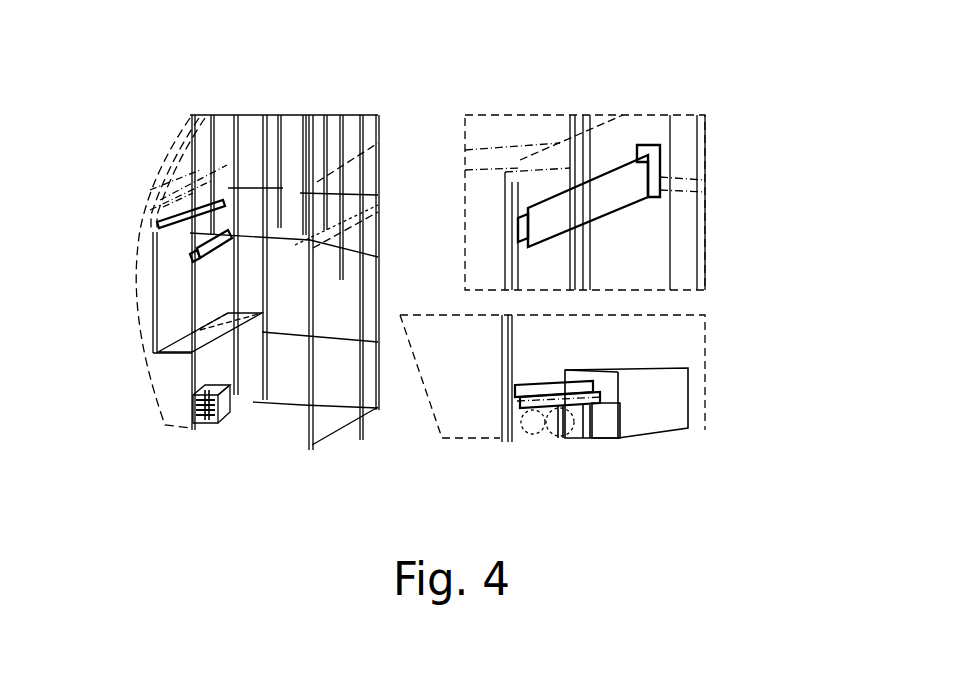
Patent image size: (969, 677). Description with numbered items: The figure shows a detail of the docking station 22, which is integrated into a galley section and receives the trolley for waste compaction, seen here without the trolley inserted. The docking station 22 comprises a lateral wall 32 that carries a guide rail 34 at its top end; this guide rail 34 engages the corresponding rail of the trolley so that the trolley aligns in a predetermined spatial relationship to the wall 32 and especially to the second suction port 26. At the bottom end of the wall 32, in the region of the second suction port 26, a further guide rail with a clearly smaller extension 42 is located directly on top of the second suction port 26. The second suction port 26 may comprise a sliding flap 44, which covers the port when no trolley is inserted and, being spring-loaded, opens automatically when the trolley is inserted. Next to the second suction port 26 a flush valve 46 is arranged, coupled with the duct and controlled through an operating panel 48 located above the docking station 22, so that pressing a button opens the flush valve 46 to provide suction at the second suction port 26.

The docking station 22 is at (283, 422).
The second suction port 26 is at (210, 422).
The lateral wall 32 is at (202, 295).
The guide rail 34 is at (212, 246).
The guide rail with smaller extension 42 is at (200, 425).
The sliding flap 44 is at (607, 430).
The flush valve 46 is at (222, 410).
The operating panel 48 is at (184, 171).